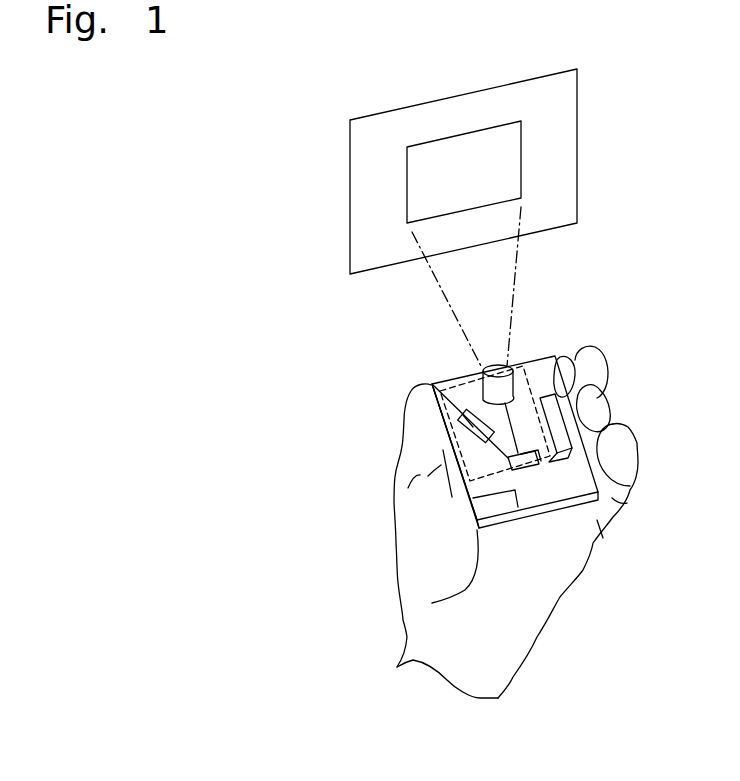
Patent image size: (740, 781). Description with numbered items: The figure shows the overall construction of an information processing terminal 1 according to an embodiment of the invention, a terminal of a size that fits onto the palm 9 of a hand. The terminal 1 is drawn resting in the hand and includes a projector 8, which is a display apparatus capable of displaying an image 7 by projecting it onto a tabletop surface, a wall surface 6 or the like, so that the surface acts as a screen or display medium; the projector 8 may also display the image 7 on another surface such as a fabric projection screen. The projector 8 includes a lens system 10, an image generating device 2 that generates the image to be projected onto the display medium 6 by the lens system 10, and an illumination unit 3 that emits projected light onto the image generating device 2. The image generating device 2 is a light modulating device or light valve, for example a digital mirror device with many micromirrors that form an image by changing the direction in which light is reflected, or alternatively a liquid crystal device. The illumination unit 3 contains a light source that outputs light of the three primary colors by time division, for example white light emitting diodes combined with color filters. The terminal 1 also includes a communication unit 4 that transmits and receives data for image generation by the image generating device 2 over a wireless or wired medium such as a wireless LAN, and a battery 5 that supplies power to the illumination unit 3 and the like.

The information processing terminal 1 is at (543, 348).
The image generating device 2 is at (539, 462).
The illumination unit 3 is at (432, 384).
The communication unit 4 is at (553, 406).
The battery 5 is at (493, 506).
The wall surface 6 is at (555, 170).
The image 7 is at (444, 155).
The projector 8 is at (518, 382).
The palm 9 is at (415, 521).
The lens system 10 is at (495, 388).